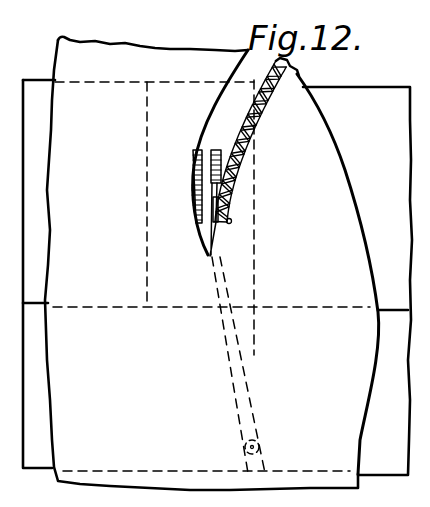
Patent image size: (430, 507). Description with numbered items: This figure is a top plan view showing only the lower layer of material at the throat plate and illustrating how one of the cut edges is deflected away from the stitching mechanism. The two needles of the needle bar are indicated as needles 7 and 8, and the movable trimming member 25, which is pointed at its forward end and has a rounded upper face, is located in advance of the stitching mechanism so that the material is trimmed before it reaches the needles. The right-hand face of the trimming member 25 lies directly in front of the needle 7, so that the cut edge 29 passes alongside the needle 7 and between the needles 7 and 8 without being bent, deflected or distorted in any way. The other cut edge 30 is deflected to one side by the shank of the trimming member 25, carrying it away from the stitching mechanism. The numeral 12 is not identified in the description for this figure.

The needle 7 is at (205, 230).
The needle 8 is at (231, 222).
The fastener tape 12 is at (195, 182).
The movable trimming member 25 is at (209, 244).
The cut edge 29 is at (217, 242).
The cut edge 30 is at (193, 197).